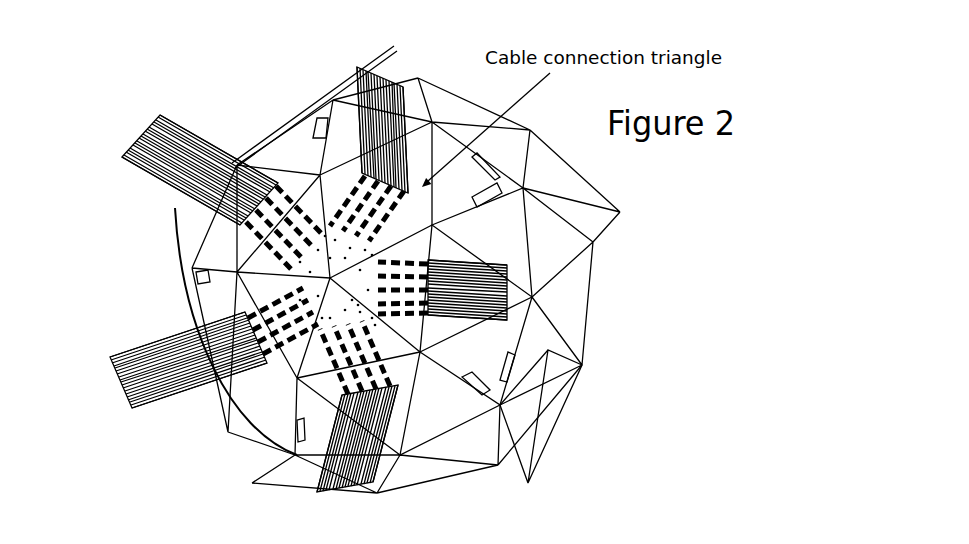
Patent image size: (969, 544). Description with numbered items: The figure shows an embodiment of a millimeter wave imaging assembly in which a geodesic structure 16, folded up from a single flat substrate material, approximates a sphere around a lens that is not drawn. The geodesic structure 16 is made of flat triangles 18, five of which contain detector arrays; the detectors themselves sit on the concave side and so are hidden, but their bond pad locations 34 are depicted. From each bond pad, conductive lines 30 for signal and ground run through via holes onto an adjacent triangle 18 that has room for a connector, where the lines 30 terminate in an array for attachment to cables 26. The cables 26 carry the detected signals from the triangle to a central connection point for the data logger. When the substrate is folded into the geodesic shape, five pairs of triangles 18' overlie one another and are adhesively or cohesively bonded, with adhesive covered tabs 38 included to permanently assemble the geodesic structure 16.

The geodesic structure 16 is at (474, 484).
The triangle 18 is at (466, 321).
The pair of triangles 18' is at (657, 427).
The cable 26 is at (147, 165).
The conductive line 30 is at (250, 398).
The bond pad location 34 is at (322, 197).
The adhesive/cohesive covered tab 38 is at (512, 364).